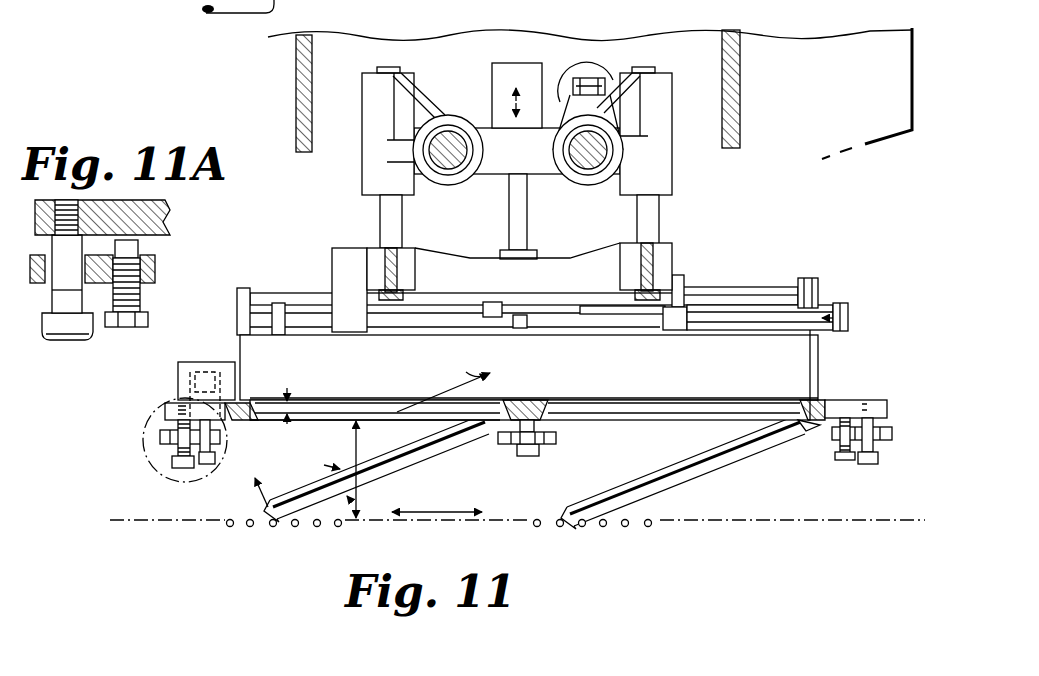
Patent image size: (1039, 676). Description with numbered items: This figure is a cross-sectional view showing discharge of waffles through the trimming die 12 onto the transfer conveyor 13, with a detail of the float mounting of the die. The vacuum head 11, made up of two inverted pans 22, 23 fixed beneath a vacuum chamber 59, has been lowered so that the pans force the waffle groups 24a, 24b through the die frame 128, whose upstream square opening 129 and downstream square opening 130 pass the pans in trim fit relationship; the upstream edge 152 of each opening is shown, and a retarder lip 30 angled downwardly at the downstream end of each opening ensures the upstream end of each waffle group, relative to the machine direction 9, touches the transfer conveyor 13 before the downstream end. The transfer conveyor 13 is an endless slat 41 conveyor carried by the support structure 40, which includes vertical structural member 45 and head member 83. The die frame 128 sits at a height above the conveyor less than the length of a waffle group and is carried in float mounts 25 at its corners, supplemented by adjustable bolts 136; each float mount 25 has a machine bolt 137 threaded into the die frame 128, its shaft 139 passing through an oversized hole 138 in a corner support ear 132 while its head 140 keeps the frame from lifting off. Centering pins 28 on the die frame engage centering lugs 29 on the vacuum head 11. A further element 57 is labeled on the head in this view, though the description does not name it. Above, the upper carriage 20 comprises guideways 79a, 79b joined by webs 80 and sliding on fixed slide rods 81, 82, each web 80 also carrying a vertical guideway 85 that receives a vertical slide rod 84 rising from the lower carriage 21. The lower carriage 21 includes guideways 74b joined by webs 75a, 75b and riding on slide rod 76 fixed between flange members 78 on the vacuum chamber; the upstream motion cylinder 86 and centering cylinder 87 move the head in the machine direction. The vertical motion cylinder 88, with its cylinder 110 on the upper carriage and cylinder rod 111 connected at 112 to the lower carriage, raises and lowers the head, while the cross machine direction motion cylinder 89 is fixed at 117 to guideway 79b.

In FIG. 11, the machine direction 9 is at (410, 522).
In FIG. 11, the vacuum head 11 is at (518, 283).
In FIG. 11, the trimming die 12 is at (886, 417).
In FIG. 11, the transfer conveyor 13 is at (690, 506).
In FIG. 11, the upper carriage 20 is at (542, 135).
In FIG. 11, the lower carriage 21 is at (539, 267).
In FIG. 11, the inverted pan 22 is at (348, 398).
In FIG. 11, the inverted pan 23 is at (670, 400).
In FIG. 11, the waffle group 24a is at (425, 454).
In FIG. 11, the waffle group 24b is at (727, 449).
In FIG. 11, the float mount 25 is at (143, 452).
In FIG. 11A, the float mount 25 is at (139, 297).
In FIG. 11, the centering pin 28 is at (220, 333).
In FIG. 11, the centering lug 29 is at (196, 370).
In FIG. 11, the retarder lip 30 is at (508, 448).
In FIG. 11, the support structure 40 is at (824, 48).
In FIG. 11, the slat 41 is at (256, 550).
In FIG. 11, the vertical structural member 45 is at (800, 50).
In FIG. 11, the plate 57 is at (313, 402).
In FIG. 11, the vacuum chamber 59 is at (434, 376).
In FIG. 11, the pair of guideways 74b is at (684, 280).
In FIG. 11, the web 75a is at (398, 276).
In FIG. 11, the web 75b is at (641, 270).
In FIG. 11, the slide rod 76 is at (289, 292).
In FIG. 11, the flange member 78 is at (244, 287).
In FIG. 11, the guideway 79a is at (448, 155).
In FIG. 11, the guideway 79b is at (605, 168).
In FIG. 11, the web 80 is at (517, 151).
In FIG. 11, the slide rod 81 is at (456, 140).
In FIG. 11, the slide rod 82 is at (616, 162).
In FIG. 11, the head member 83 is at (410, 101).
In FIG. 11, the slide rod 84 is at (652, 212).
In FIG. 11, the guideway 85 is at (672, 124).
In FIG. 11, the upstream motion cylinder 86 is at (313, 329).
In FIG. 11, the centering cylinder 87 is at (848, 316).
In FIG. 11, the vertical motion cylinder 88 is at (514, 61).
In FIG. 11, the cross machine direction motion cylinder 89 is at (586, 64).
In FIG. 11, the cylinder 110 is at (510, 80).
In FIG. 11, the cylinder rod 111 is at (526, 228).
In FIG. 11, the connection 112 is at (506, 252).
In FIG. 11, the fixing point 117 is at (560, 84).
In FIG. 11, the die frame 128 is at (830, 397).
In FIG. 11A, the die frame 128 is at (172, 213).
In FIG. 11, the upstream square opening 129 is at (258, 423).
In FIG. 11, the downstream square opening 130 is at (620, 418).
In FIG. 11, the ear 132 is at (893, 436).
In FIG. 11A, the ear 132 is at (156, 274).
In FIG. 11, the adjustable bolt 136 is at (845, 462).
In FIG. 11A, the adjustable bolt 136 is at (148, 302).
In FIG. 11, the machine bolt 137 is at (880, 462).
In FIG. 11A, the machine bolt 137 is at (66, 346).
In FIG. 11A, the hole 138 is at (72, 274).
In FIG. 11A, the shaft 139 is at (66, 297).
In FIG. 11A, the head 140 is at (95, 334).
In FIG. 11, the upstream edge 152 is at (528, 396).